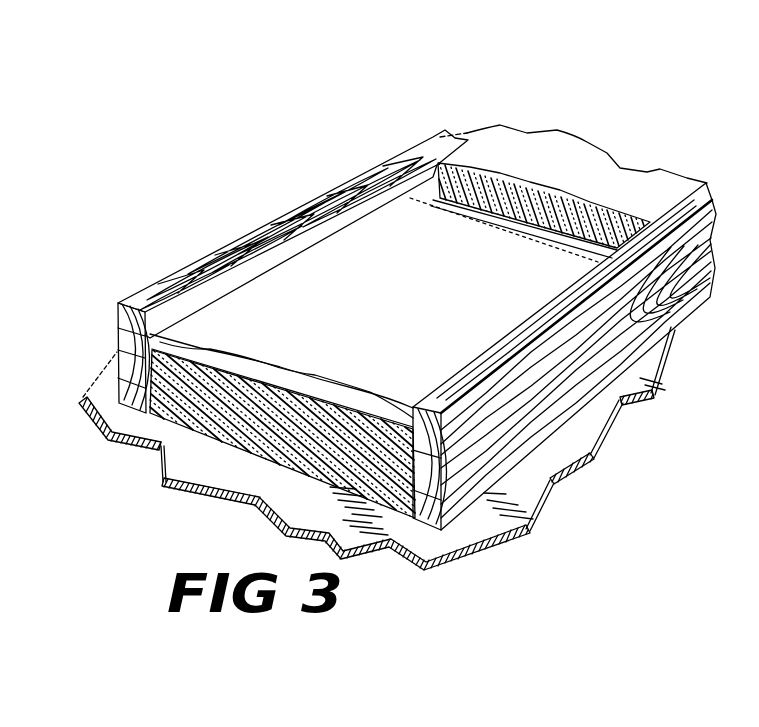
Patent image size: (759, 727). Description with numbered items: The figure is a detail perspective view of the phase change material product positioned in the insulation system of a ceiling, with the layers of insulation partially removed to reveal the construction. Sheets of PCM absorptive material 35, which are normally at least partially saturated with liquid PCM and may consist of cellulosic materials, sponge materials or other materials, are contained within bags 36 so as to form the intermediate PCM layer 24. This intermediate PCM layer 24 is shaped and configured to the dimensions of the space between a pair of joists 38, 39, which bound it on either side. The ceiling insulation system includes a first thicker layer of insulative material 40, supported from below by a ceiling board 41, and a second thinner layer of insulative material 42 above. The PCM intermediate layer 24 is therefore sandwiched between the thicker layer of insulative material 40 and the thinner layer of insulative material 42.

The intermediate PCM layer 24 is at (389, 332).
The PCM absorptive material 35 is at (262, 366).
The bags 36 is at (252, 347).
The joist 38 is at (252, 237).
The joist 39 is at (543, 418).
The first thicker layer of insulative material 40 is at (308, 460).
The ceiling board 41 is at (215, 470).
The second thinner layer of insulative material 42 is at (503, 187).